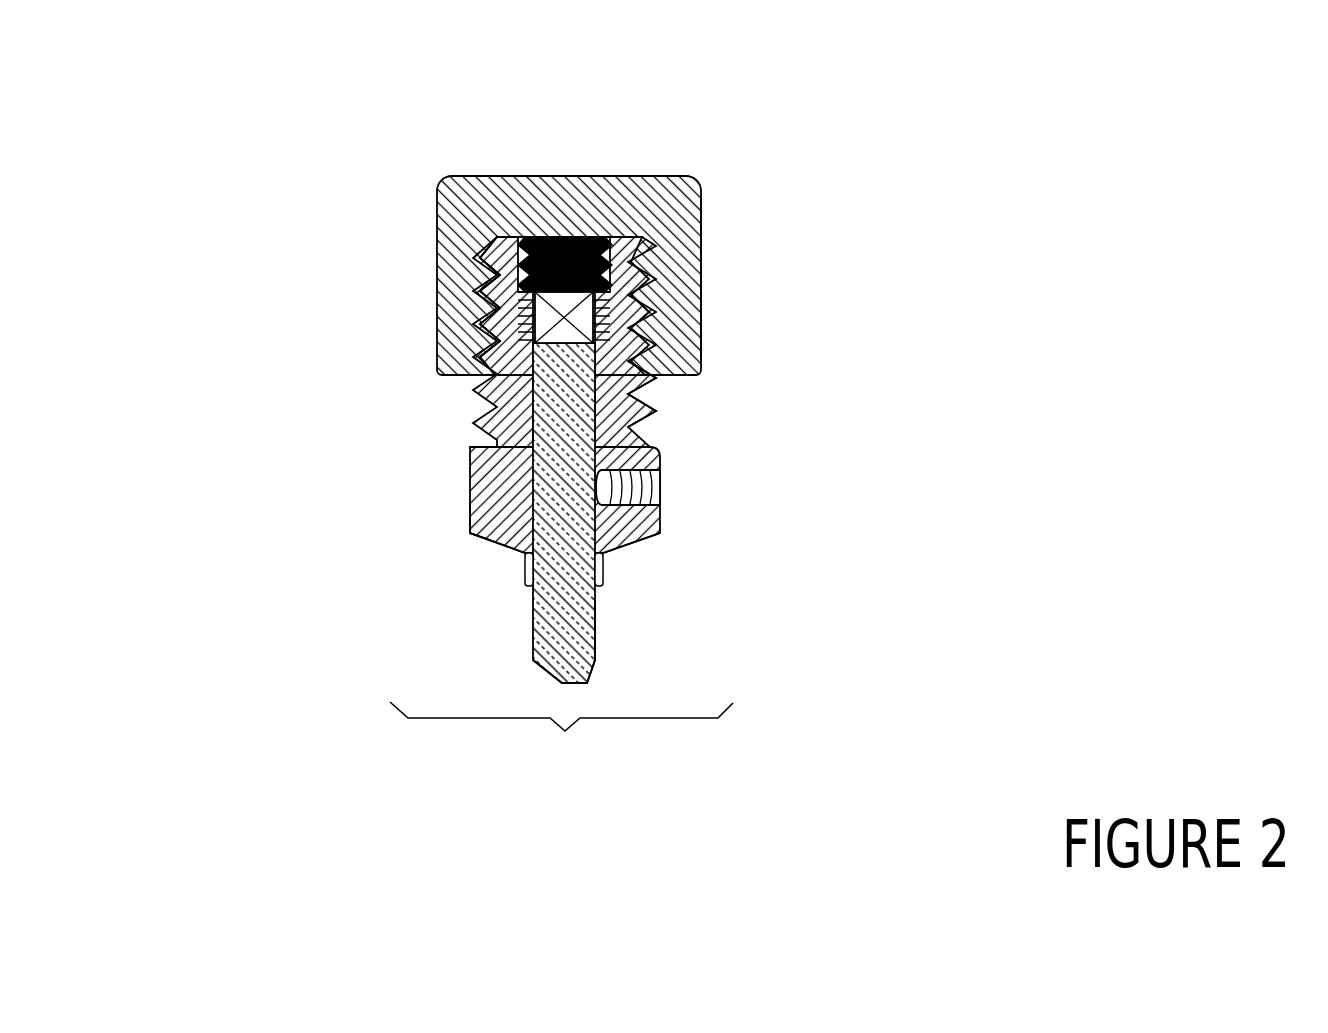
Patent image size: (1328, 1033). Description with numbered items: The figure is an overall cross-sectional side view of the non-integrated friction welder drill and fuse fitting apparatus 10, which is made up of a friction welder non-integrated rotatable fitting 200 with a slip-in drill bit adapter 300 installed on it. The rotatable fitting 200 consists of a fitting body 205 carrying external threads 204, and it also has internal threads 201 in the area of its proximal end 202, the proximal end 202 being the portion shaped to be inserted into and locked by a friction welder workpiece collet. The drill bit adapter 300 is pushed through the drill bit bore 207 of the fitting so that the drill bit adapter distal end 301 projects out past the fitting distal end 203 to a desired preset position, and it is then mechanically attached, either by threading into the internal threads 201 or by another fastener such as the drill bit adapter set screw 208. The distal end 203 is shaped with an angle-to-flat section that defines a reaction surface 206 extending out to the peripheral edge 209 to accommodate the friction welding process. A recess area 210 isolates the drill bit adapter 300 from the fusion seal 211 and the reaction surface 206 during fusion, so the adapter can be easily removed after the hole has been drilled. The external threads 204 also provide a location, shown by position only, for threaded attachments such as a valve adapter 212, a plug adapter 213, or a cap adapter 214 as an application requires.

The friction welder drill and fuse fitting apparatus 10 is at (561, 736).
The friction welder non-integrated rotatable fitting 200 is at (483, 306).
The friction welder non-integrated rotatable fitting internal threads 201 is at (441, 217).
The friction welder non-integrated rotatable fitting proximal end 202 is at (569, 217).
The friction welder non-integrated rotatable fitting distal end 203 is at (305, 332).
The friction welder non-integrated rotatable fitting external threads 204 is at (690, 253).
The friction welder non-integrated rotatable fitting body 205 is at (717, 253).
The friction welder non-integrated rotatable fitting reaction surface 206 is at (339, 318).
The friction welder non-integrated rotatable fitting drill bit bore 207 is at (753, 371).
The friction welder non-integrated rotatable fitting drill bit adapter set screw 208 is at (818, 282).
The friction welder non-integrated rotatable fitting peripheral edge 209 is at (359, 299).
The friction welder non-integrated rotatable fitting recess area 210 is at (855, 306).
The friction welder non-integrated rotatable fitting fusion seal 211 is at (885, 322).
The friction welder non-integrated rotatable fitting valve adapter 212 is at (561, 201).
The friction welder non-integrated rotatable fitting plug adapter 213 is at (601, 175).
The friction welder non-integrated rotatable fitting cap adapter 214 is at (727, 209).
The friction welder non-integrated rotatable fitting drill bit adapter 300 is at (914, 359).
The friction welder non-integrated rotatable fitting drill bit adapter distal end 301 is at (922, 373).